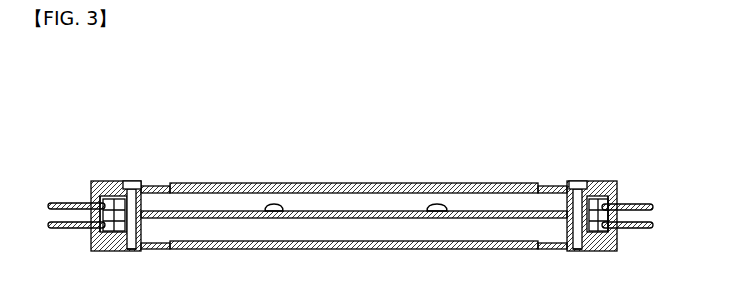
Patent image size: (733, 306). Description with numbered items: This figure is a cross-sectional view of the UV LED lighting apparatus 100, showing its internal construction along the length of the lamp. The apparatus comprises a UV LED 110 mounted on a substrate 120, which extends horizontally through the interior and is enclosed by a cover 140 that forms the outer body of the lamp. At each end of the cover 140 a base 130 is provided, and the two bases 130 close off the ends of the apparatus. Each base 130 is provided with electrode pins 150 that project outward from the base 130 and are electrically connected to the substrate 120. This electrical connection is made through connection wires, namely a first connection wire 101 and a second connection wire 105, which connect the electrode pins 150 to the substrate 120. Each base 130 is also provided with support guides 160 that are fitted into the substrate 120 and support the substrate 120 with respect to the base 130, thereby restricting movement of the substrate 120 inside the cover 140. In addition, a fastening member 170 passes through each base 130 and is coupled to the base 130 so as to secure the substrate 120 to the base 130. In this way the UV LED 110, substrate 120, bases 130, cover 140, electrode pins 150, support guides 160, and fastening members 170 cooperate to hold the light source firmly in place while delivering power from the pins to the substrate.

The UV LED lighting apparatus 100 is at (466, 118).
The first connection wire 101 is at (106, 204).
The second connection wire 105 is at (134, 250).
The UV LED 110 is at (274, 207).
The substrate 120 is at (358, 216).
The base 130 is at (99, 178).
The cover 140 is at (323, 250).
The electrode pin 150 is at (62, 229).
The support guide 160 is at (112, 231).
The fastening member 170 is at (133, 181).